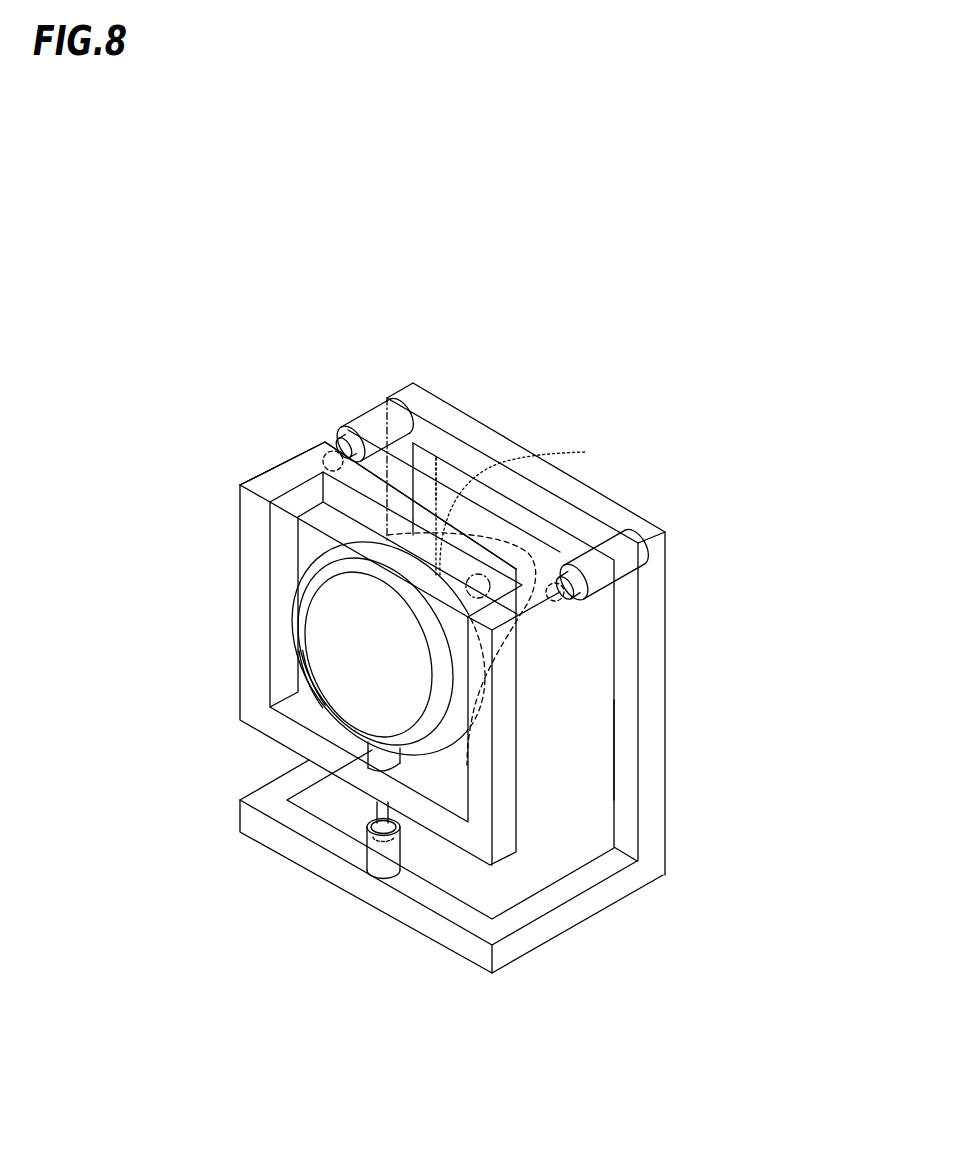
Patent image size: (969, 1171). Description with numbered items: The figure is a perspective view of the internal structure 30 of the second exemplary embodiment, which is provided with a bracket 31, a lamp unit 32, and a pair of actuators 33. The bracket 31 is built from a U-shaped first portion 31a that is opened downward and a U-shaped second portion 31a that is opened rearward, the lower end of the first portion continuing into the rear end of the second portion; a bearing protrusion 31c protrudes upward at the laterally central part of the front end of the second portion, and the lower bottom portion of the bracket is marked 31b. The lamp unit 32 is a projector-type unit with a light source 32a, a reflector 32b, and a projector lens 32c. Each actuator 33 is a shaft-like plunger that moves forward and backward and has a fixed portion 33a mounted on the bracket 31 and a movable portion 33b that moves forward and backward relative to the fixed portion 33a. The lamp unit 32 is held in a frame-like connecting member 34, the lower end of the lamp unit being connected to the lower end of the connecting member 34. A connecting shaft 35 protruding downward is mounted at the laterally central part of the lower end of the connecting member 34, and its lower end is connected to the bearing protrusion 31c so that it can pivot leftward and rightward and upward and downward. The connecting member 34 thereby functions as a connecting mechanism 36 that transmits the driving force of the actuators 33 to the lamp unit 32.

The internal structure 30 is at (160, 359).
The bracket 31 is at (655, 744).
The first portion 31a is at (655, 793).
The bottom portion of outer frame 31b is at (622, 892).
The bearing protrusion 31c is at (385, 852).
The lamp unit 32 is at (296, 604).
The light source 32a is at (478, 510).
The reflector 32b is at (466, 500).
The projector lens 32c is at (300, 653).
The actuator 33 is at (374, 412).
The fixed portion 33a is at (406, 412).
The movable portion 33b is at (346, 423).
The connecting member 34 is at (258, 478).
The connecting shaft 35 is at (375, 818).
The connecting mechanism 36 is at (378, 505).